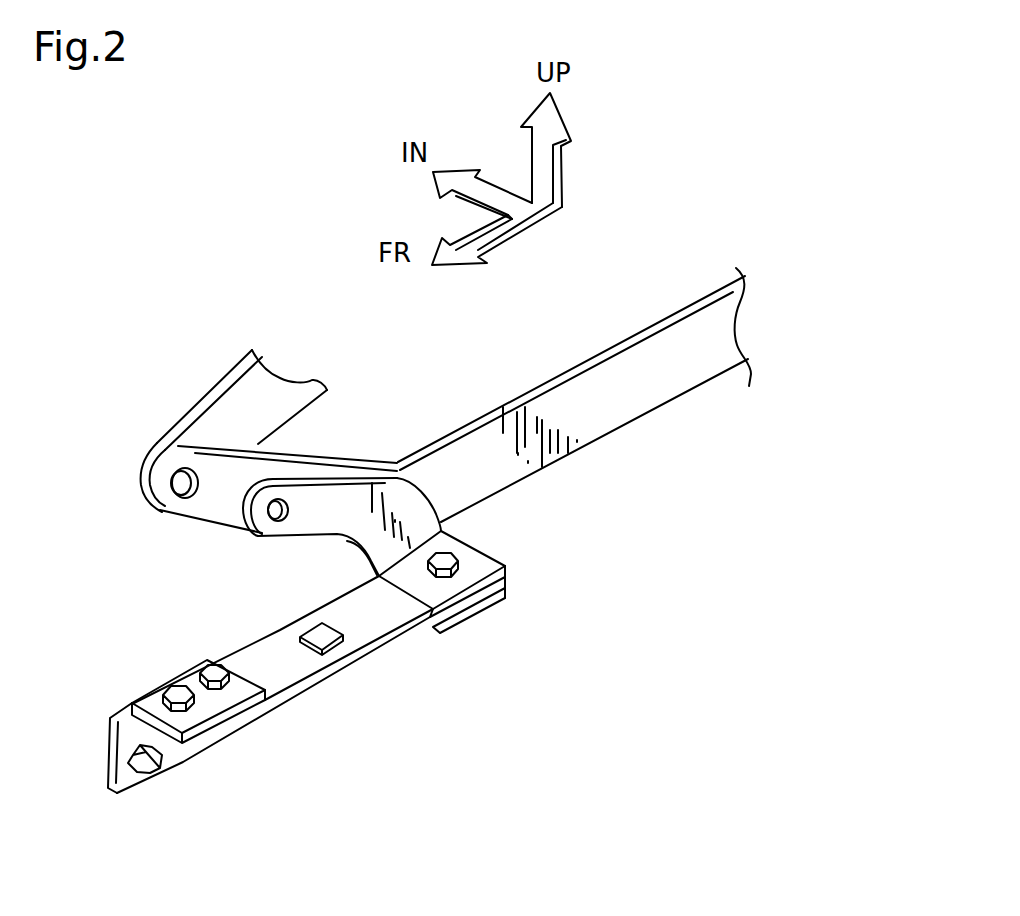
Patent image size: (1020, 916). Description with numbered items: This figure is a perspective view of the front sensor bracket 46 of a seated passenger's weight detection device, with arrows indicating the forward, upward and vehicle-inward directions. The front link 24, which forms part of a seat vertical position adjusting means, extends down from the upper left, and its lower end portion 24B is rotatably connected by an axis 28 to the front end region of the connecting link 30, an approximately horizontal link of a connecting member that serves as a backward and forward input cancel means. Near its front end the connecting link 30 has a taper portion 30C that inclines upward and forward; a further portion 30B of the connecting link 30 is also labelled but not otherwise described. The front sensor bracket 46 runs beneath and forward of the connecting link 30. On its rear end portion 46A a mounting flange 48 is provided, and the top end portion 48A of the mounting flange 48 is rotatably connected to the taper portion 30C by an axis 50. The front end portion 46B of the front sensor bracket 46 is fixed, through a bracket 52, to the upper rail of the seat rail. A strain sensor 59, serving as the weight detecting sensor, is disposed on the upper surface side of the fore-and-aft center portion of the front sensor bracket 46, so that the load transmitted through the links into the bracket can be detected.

The front link 24 is at (218, 383).
The lower end portion of the front link 24B is at (163, 452).
The axis 28 is at (172, 483).
The connecting link 30 is at (603, 340).
The lower portion of frame member 30B is at (157, 505).
The taper portion 30C is at (338, 466).
The front sensor bracket 46 is at (381, 650).
The rear end portion of the front sensor bracket 46A is at (503, 583).
The front end portion of the front sensor bracket 46B is at (232, 722).
The mounting flange 48 is at (396, 477).
The top end portion of the mounting flange 48A is at (275, 480).
The axis 50 is at (277, 521).
The bracket 52 is at (126, 777).
The strain sensor 59 is at (310, 630).